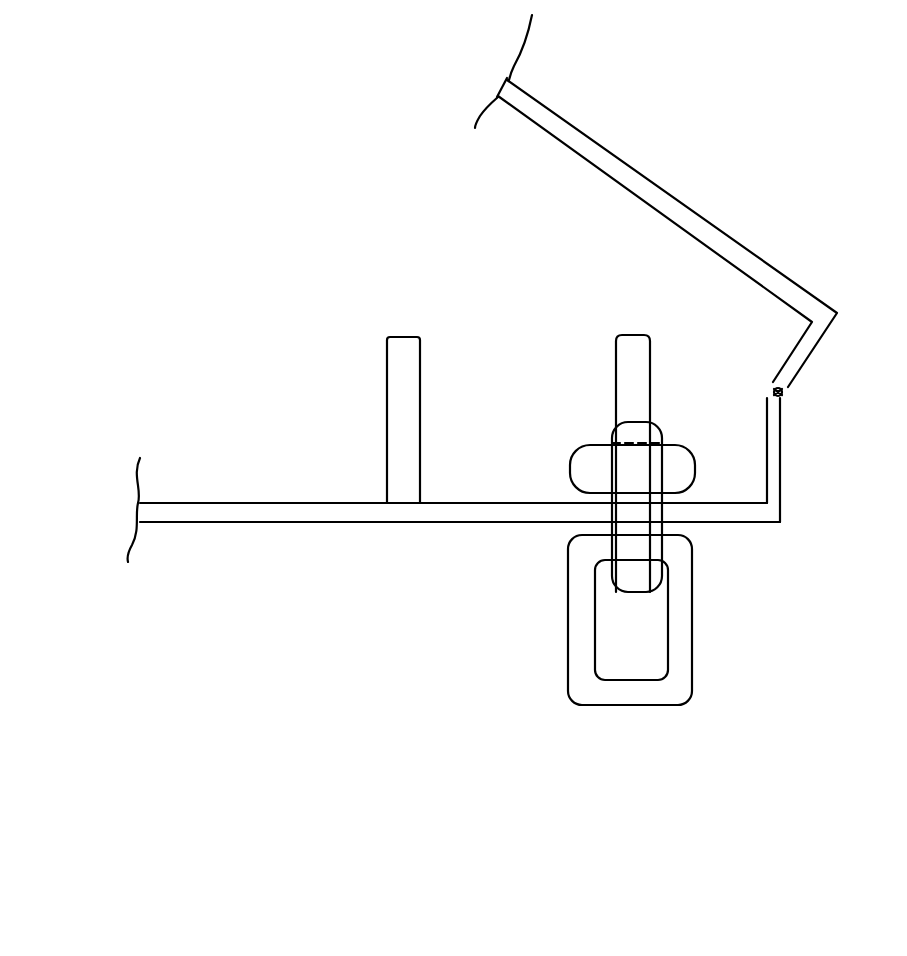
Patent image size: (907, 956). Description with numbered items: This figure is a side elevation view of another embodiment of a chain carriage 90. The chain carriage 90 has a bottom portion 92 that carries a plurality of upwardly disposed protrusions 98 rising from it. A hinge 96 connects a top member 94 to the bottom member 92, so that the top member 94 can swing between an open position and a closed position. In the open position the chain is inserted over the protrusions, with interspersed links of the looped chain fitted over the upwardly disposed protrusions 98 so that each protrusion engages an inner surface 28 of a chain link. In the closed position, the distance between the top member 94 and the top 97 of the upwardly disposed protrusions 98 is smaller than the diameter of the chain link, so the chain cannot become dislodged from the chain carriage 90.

The chain carriage 90 is at (305, 680).
The bottom portion 92 is at (438, 525).
The top member 94 is at (750, 256).
The hinge 96 is at (788, 397).
The top of the upwardly disposed protrusion 97 is at (400, 333).
The upwardly disposed protrusion 98 is at (620, 333).
The inner surface 28 is at (662, 442).